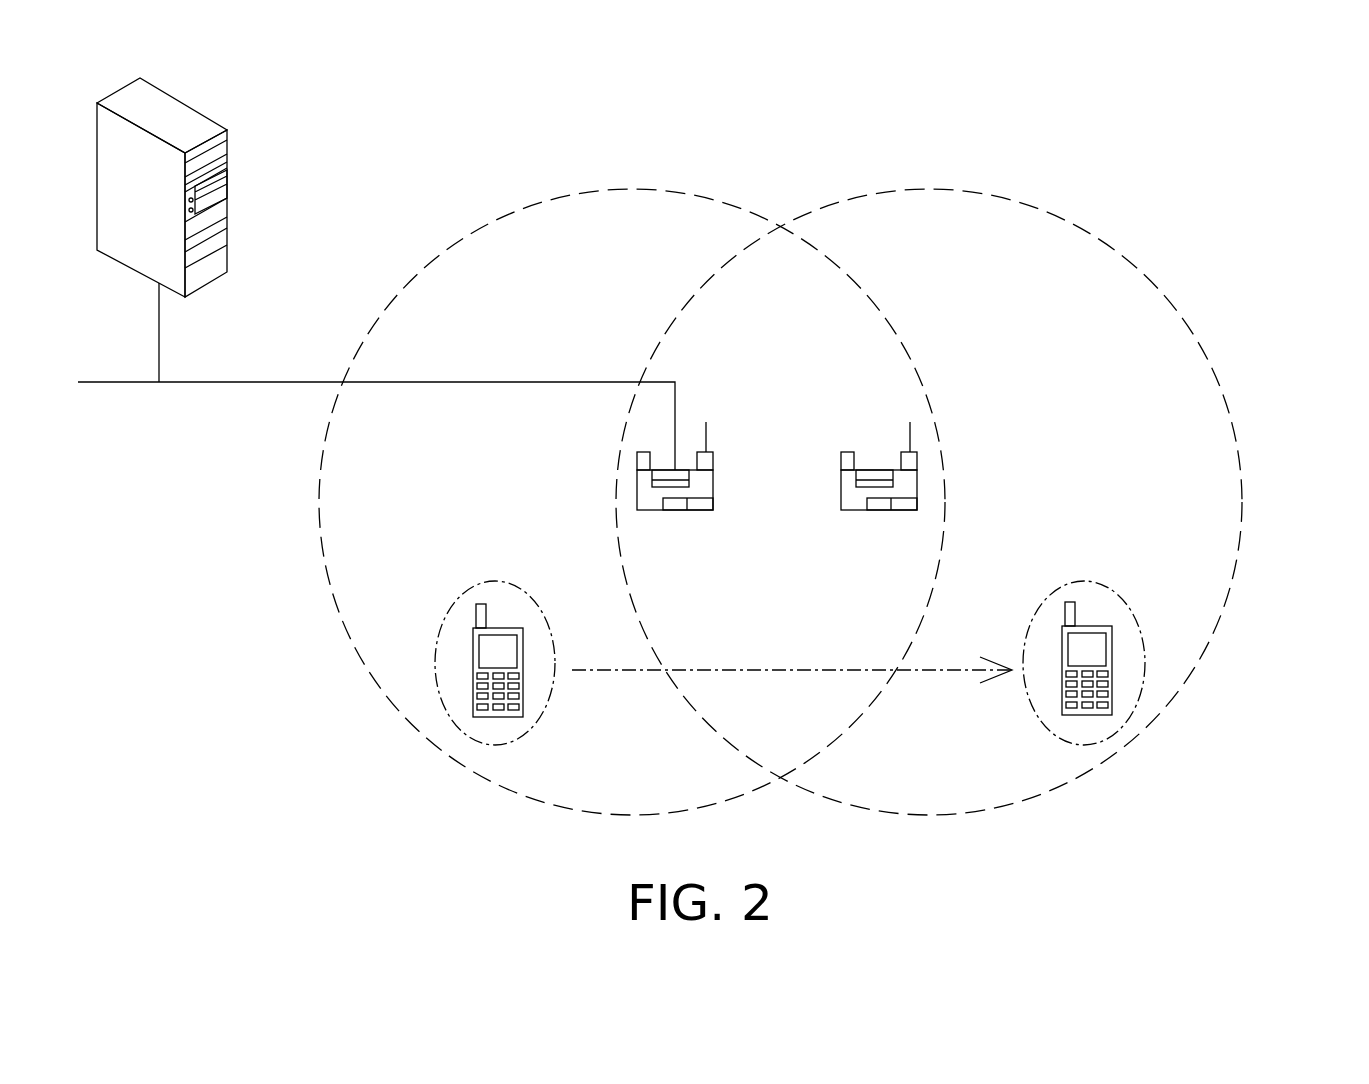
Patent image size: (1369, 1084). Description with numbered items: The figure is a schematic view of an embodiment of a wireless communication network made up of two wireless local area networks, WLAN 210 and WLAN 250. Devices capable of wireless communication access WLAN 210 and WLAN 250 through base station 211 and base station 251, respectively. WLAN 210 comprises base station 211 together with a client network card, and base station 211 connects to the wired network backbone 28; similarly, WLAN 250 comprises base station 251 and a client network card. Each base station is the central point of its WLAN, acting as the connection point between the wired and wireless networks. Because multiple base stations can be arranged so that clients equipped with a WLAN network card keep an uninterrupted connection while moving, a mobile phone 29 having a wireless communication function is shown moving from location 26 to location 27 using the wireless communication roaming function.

The wired network backbone 28 is at (298, 382).
The wireless local area network 210 is at (725, 207).
The wireless local area network 250 is at (1107, 247).
The base station 211 is at (713, 483).
The base station 251 is at (917, 478).
The location 26 is at (460, 595).
The location 27 is at (1120, 595).
The mobile phone 29 is at (473, 705).